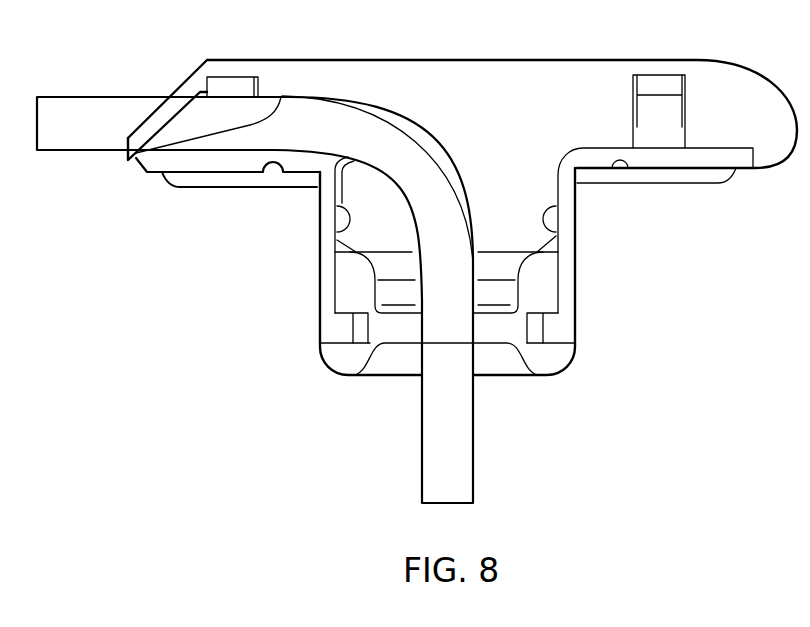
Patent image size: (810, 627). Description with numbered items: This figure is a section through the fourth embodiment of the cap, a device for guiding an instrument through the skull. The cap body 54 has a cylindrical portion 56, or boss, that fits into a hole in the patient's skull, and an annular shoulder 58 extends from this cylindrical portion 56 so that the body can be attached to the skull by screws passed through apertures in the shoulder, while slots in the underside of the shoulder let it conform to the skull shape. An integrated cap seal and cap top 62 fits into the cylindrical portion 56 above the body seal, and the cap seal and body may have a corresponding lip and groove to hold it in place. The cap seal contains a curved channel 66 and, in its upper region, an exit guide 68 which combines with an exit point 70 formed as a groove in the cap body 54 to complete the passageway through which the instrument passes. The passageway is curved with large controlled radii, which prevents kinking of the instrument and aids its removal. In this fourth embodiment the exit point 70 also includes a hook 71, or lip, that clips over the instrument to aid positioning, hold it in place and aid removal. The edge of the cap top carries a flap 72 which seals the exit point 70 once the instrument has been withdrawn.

The cap body 54 is at (702, 177).
The cylindrical portion 56 is at (570, 290).
The annular shoulder 58 is at (230, 188).
The integrated cap seal and cap top 62 is at (560, 77).
The curved channel 66 is at (423, 145).
The exit guide 68 is at (143, 153).
The exit point 70 is at (226, 147).
The hook 71 is at (655, 75).
The flap 72 is at (153, 112).